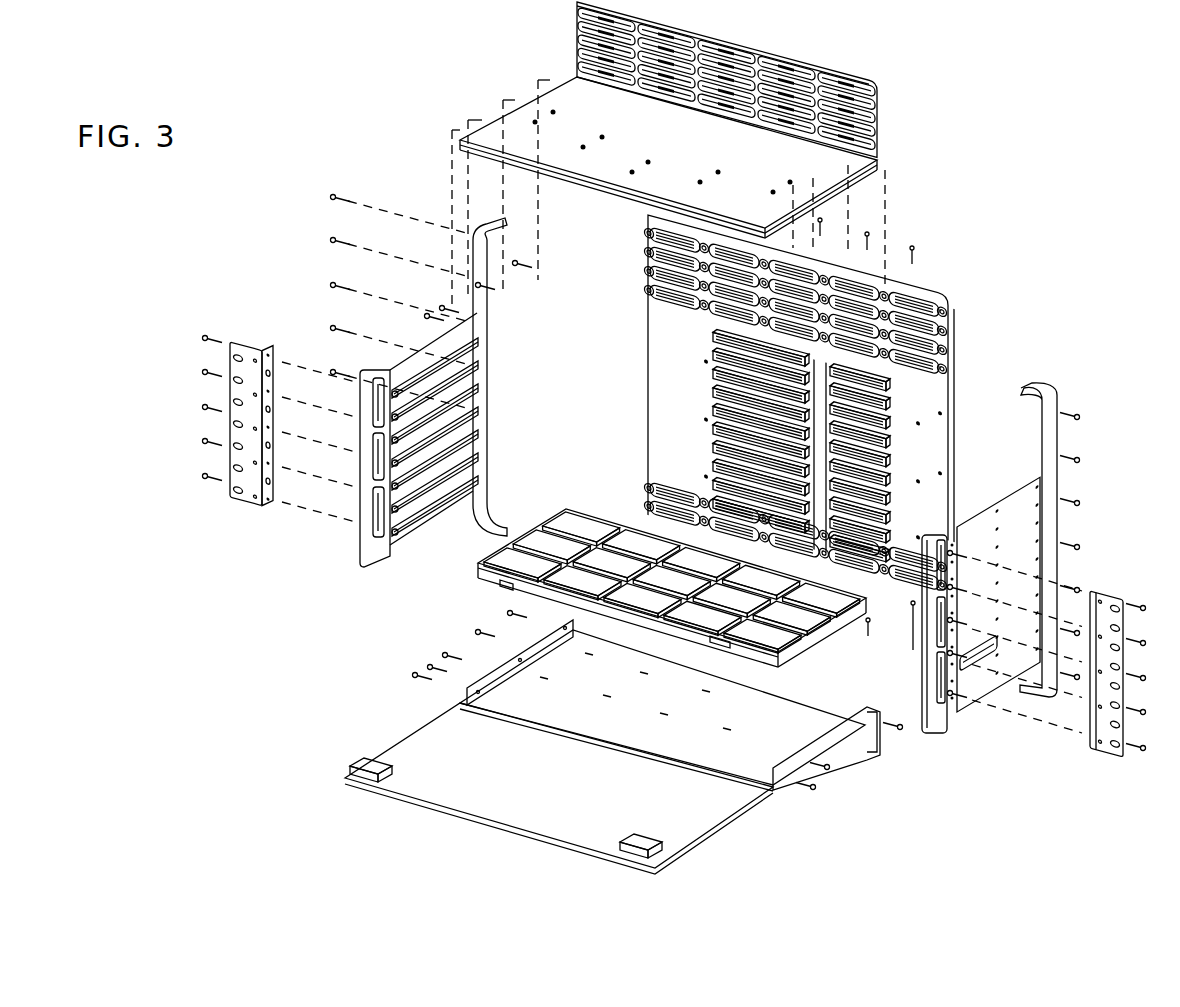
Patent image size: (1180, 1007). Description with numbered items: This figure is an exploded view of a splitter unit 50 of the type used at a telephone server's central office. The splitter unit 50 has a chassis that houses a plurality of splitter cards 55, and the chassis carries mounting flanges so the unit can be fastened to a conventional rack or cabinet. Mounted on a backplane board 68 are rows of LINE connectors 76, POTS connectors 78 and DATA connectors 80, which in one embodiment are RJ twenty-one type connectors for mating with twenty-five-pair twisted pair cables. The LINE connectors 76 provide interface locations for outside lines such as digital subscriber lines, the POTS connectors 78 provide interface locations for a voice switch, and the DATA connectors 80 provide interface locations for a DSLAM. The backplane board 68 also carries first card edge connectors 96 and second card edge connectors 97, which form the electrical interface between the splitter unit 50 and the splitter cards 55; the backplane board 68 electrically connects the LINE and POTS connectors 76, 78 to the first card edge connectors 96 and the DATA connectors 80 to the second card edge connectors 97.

The splitter unit 50 is at (945, 210).
The splitter cards 55 is at (490, 573).
The backplane board 68 is at (926, 445).
The LINE connectors 76 is at (648, 253).
The POTS connectors 78 is at (648, 233).
The DATA connectors 80 is at (652, 506).
The first card edge connectors 96 is at (717, 332).
The second card edge connectors 97 is at (880, 381).